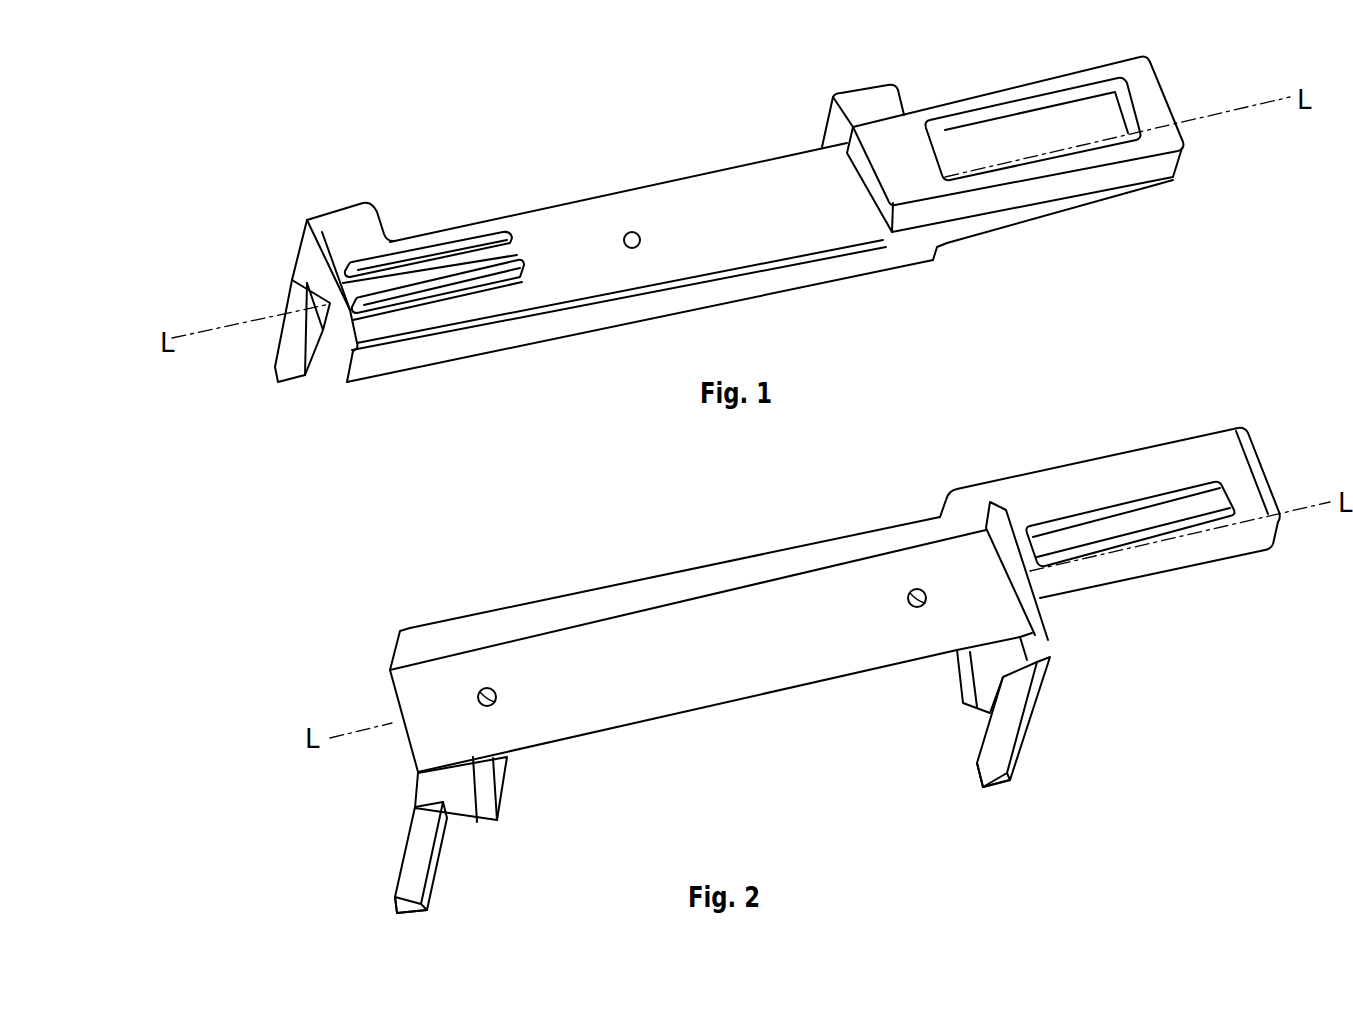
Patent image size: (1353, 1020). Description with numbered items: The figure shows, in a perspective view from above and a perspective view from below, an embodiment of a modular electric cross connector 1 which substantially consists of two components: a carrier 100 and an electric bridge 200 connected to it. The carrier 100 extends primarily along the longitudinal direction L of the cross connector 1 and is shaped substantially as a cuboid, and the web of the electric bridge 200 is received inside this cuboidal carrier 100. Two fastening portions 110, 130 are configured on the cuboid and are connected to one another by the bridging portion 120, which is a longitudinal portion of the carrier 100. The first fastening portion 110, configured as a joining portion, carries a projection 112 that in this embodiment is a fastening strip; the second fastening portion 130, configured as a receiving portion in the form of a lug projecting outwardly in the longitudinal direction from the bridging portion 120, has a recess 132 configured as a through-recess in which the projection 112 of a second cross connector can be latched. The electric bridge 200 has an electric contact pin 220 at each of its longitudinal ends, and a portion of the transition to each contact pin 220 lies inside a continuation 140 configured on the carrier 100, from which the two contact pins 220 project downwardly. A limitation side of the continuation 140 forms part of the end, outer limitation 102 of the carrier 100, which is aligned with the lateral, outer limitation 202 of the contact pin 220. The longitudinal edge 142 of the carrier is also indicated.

In FIG. 1, the modular electric cross connector 1 is at (347, 80).
In FIG. 2, the modular electric cross connector 1 is at (548, 518).
In FIG. 1, the carrier 100 is at (560, 200).
In FIG. 2, the carrier 100 is at (862, 526).
In FIG. 1, the end, outer limitation of the carrier 102 is at (303, 257).
In FIG. 2, the end, outer limitation of the carrier 102 is at (390, 697).
In FIG. 1, the first fastening portion 110 is at (457, 317).
In FIG. 1, the projection 112 is at (420, 253).
In FIG. 1, the bridging portion 120 is at (798, 237).
In FIG. 2, the bridging portion 120 is at (665, 630).
In FIG. 1, the second fastening portion 130 is at (1047, 197).
In FIG. 2, the second fastening portion 130 is at (1065, 492).
In FIG. 1, the recess 132 is at (1047, 133).
In FIG. 2, the recess 132 is at (1127, 510).
In FIG. 1, the continuation 140 is at (333, 212).
In FIG. 2, the continuation 140 is at (493, 780).
In FIG. 1, the longitudinal edge 142 is at (668, 178).
In FIG. 2, the longitudinal edge 142 is at (705, 705).
In FIG. 1, the electric bridge 200 is at (264, 372).
In FIG. 2, the electric bridge 200 is at (706, 785).
In FIG. 1, the electric contact pin 220 is at (295, 372).
In FIG. 2, the electric contact pin 220 is at (418, 860).
In FIG. 1, the lateral, outer limitation of the electric bridge / contact pin 202 is at (275, 367).
In FIG. 2, the lateral, outer limitation of the electric bridge / contact pin 202 is at (398, 868).